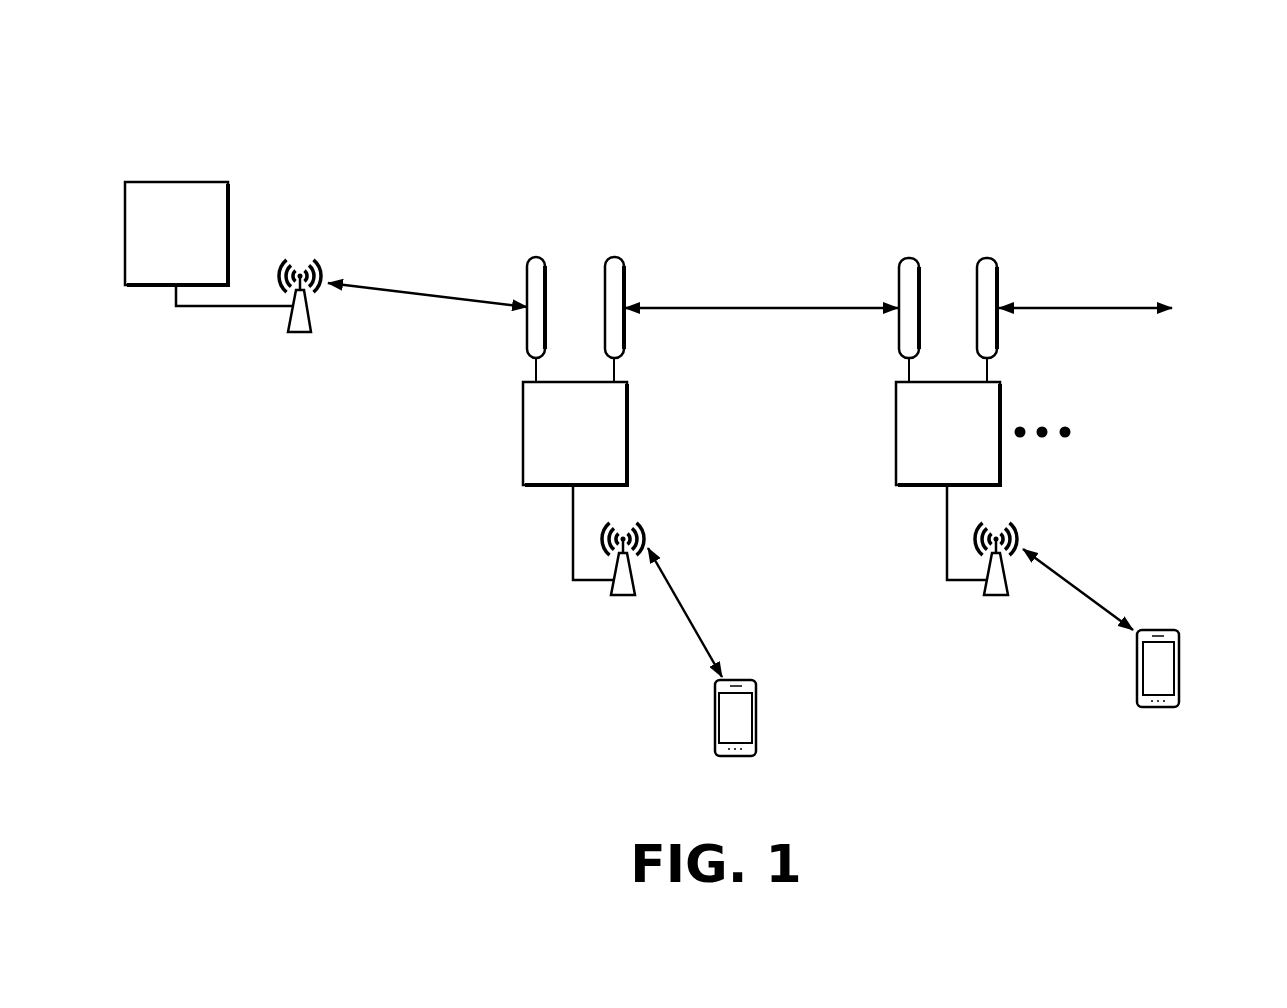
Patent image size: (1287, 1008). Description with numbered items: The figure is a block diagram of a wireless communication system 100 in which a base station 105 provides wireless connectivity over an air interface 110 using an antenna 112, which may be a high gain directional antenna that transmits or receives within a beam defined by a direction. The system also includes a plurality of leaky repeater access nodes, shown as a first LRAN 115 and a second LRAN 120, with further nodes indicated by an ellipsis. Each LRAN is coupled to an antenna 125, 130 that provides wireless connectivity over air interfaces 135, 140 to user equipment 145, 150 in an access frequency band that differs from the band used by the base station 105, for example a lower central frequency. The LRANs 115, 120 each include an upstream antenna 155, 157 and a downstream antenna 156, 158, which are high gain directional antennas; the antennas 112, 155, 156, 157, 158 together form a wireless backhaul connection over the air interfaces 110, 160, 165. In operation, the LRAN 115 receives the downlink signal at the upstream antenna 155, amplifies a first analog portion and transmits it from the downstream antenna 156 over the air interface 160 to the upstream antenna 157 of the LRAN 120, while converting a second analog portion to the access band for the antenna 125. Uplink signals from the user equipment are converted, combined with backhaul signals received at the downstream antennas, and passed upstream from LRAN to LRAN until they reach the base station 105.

The wireless communication system 100 is at (1145, 108).
The base station 105 is at (232, 210).
The air interface 110 is at (382, 282).
The antenna 112 is at (298, 334).
The leaky repeater access node 115 is at (515, 432).
The leaky repeater access node 120 is at (888, 432).
The antenna 125 is at (622, 597).
The antenna 130 is at (998, 597).
The air interface 135 is at (688, 610).
The air interface 140 is at (1080, 587).
The user equipment 145 is at (713, 723).
The user equipment 150 is at (1180, 680).
The upstream antenna 155 is at (525, 287).
The downstream antenna 156 is at (627, 283).
The upstream antenna 157 is at (898, 282).
The downstream antenna 158 is at (999, 283).
The air interface 160 is at (798, 303).
The air interface 165 is at (1095, 302).